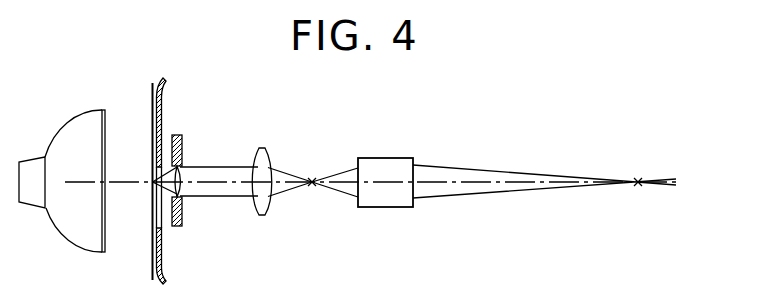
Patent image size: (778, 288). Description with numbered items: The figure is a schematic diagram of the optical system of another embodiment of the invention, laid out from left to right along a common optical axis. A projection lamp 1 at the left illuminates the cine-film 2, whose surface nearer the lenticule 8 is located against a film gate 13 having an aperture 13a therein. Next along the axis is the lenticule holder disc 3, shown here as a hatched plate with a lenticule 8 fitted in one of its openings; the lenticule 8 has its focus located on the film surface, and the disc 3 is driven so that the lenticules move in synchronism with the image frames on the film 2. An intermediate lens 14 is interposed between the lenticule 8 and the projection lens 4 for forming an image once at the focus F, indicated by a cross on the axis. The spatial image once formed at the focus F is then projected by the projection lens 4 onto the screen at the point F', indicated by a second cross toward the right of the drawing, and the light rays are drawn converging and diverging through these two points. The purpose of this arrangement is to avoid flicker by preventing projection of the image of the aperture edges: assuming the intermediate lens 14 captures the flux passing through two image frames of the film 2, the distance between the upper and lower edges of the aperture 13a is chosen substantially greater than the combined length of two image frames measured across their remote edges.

The projection lamp 1 is at (73, 126).
The cine-film 2 is at (152, 112).
The lenticule holder disc 3 is at (181, 140).
The projection lens 4 is at (398, 159).
The lenticule 8 is at (181, 194).
The film gate 13 is at (161, 94).
The aperture 13a is at (160, 226).
The intermediate lens 14 is at (266, 157).
The focus F is at (317, 202).
The point on screen F' is at (631, 202).